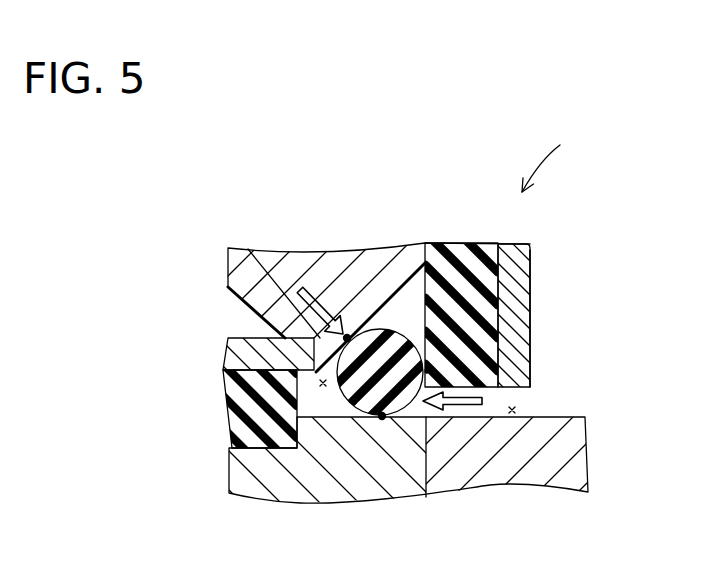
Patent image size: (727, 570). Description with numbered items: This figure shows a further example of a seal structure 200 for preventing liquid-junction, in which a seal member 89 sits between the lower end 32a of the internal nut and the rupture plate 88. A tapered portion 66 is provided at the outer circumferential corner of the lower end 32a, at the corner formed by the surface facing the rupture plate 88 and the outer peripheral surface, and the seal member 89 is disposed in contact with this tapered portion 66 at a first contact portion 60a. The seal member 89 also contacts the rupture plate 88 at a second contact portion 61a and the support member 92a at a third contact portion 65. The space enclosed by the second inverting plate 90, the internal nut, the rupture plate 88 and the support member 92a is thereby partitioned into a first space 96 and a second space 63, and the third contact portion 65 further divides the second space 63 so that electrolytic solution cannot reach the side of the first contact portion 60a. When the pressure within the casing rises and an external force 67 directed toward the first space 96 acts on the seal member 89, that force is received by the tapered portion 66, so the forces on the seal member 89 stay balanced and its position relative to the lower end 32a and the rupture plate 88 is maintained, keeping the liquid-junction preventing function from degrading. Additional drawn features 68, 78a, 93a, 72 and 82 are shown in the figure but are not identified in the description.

The connector assembly 200 is at (553, 156).
The second inverting plate 90 is at (252, 249).
The lower end of internal nut 32a is at (290, 315).
The pressing force direction 68 is at (310, 296).
The first contact portion 60a is at (352, 335).
The tapered portion 66 is at (424, 268).
The support member 92a is at (533, 265).
The wall portion 78a is at (517, 300).
The third contact portion 65 is at (428, 372).
The lateral force direction 93a is at (513, 391).
The external force 67 is at (482, 401).
The second space 63 is at (585, 442).
The base portion 72 is at (543, 467).
The rupture plate 88 is at (282, 468).
The seal member 89 is at (358, 392).
The second contact portion 61a is at (387, 417).
The seal member 82 is at (240, 388).
The first space 96 is at (323, 385).